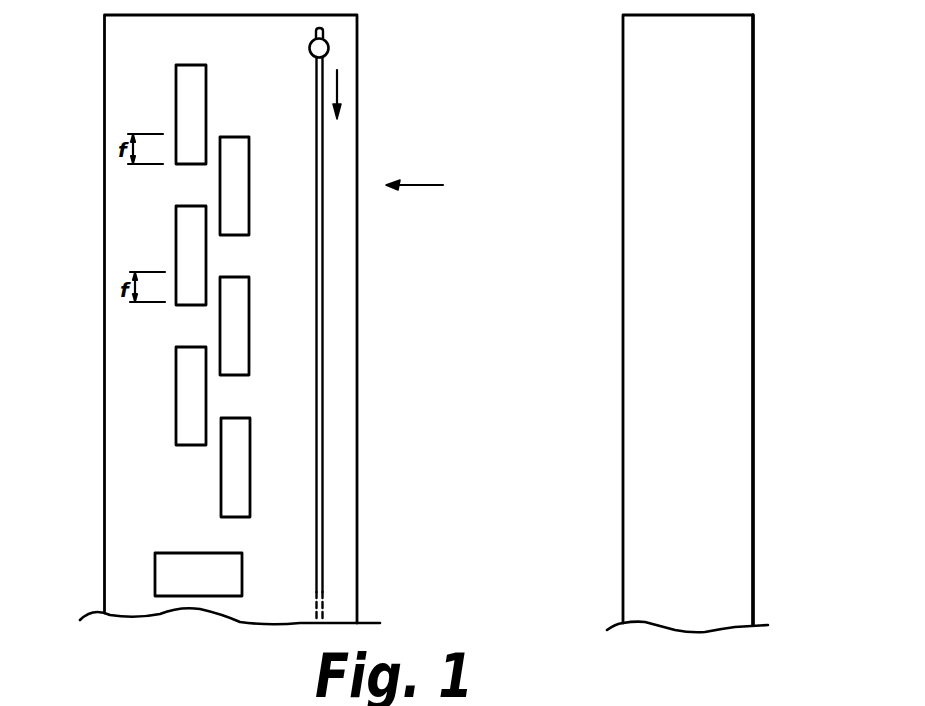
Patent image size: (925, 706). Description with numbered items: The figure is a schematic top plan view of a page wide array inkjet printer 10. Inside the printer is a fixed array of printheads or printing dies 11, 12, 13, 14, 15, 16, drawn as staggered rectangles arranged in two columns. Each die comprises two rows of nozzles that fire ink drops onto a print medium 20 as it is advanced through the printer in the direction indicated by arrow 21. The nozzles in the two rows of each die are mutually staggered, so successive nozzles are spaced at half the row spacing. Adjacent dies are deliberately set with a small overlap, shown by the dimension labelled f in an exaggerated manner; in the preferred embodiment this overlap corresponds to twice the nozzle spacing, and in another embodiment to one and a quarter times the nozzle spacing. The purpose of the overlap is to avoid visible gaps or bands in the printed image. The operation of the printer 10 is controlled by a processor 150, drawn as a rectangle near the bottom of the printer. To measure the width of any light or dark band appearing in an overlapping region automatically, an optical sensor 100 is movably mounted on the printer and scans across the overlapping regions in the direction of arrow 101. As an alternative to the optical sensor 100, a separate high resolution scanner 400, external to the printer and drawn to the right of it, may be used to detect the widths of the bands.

The page wide array inkjet printer 10 is at (381, 113).
The printing die 11 is at (186, 100).
The printing die 12 is at (237, 188).
The printing die 13 is at (190, 233).
The printing die 14 is at (237, 323).
The printing die 15 is at (188, 385).
The printing die 16 is at (233, 483).
The print medium 20 is at (335, 269).
The arrow 21 is at (418, 165).
The optical sensor 100 is at (320, 47).
The arrow 101 is at (337, 81).
The processor 150 is at (173, 567).
The high resolution scanner 400 is at (710, 147).